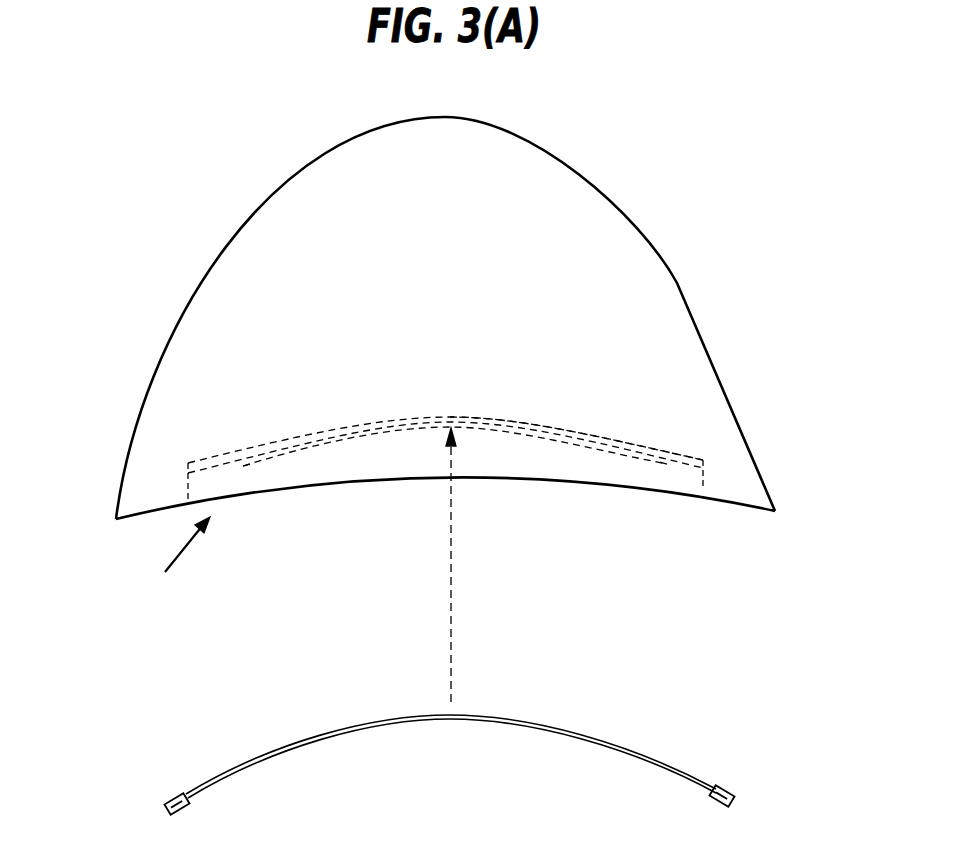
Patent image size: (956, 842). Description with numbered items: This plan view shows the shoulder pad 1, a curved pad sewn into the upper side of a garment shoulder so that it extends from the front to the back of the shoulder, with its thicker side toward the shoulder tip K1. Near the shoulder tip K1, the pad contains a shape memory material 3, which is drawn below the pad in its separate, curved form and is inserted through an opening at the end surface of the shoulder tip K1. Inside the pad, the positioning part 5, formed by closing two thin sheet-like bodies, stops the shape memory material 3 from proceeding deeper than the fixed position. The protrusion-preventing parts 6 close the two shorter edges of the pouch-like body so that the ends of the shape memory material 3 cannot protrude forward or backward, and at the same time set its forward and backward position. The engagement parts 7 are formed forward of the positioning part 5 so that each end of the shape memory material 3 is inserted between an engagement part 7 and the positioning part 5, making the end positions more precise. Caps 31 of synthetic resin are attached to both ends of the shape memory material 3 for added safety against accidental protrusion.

The pad 1 is at (607, 192).
The shape memory material 3 is at (236, 450).
The positioning part 5 is at (566, 424).
The protrusion-preventing part 6 is at (188, 488).
The engagement part 7 is at (247, 463).
The cap 31 is at (165, 793).
The shoulder tip K1 is at (176, 565).